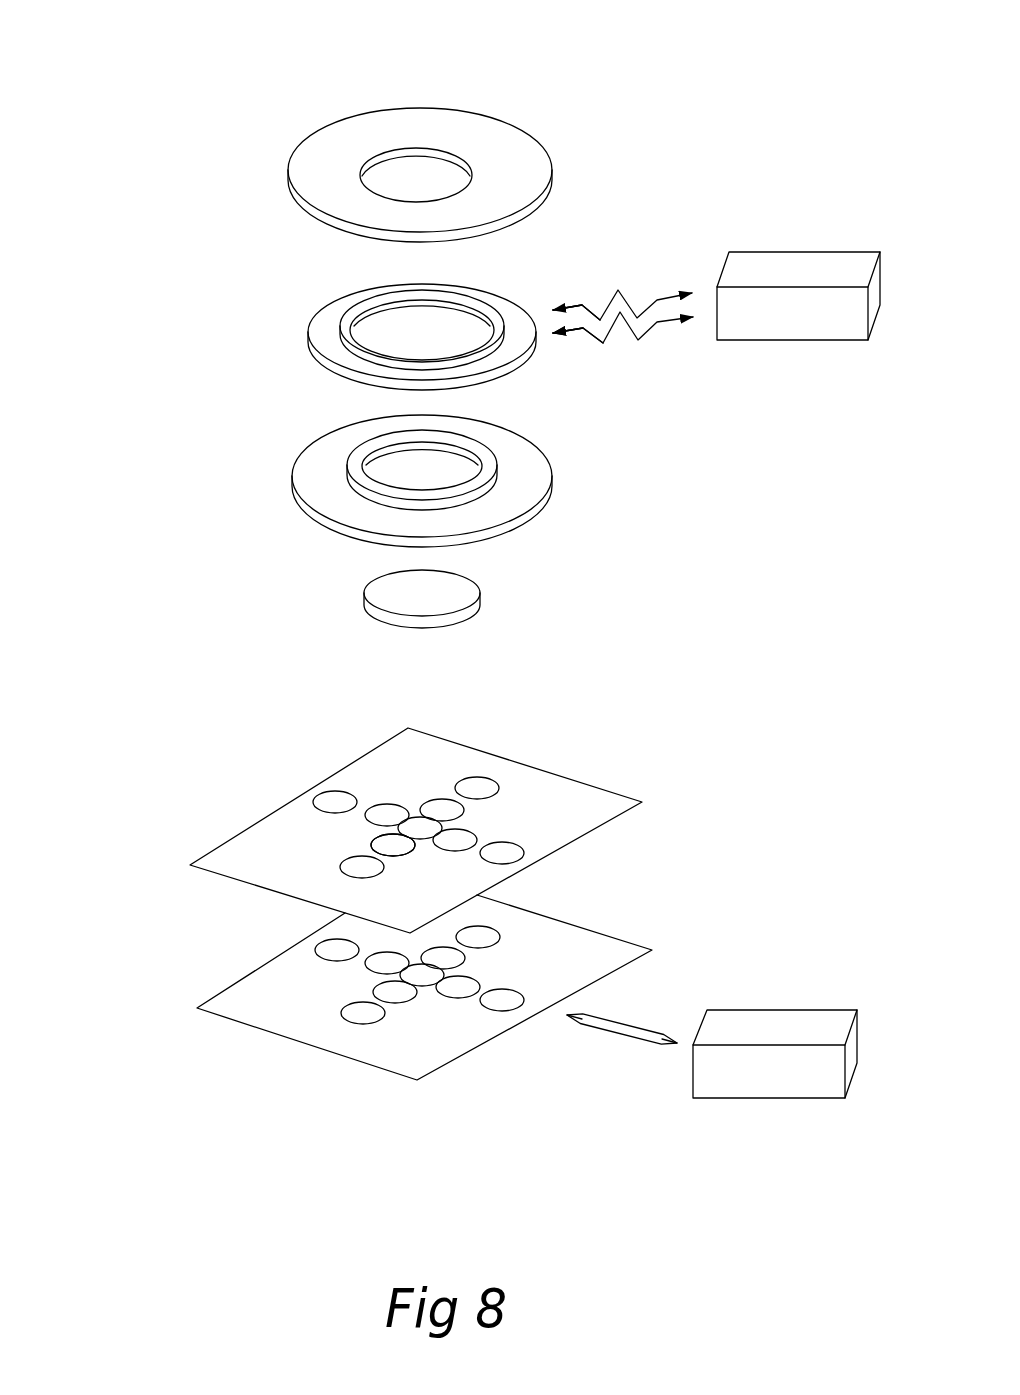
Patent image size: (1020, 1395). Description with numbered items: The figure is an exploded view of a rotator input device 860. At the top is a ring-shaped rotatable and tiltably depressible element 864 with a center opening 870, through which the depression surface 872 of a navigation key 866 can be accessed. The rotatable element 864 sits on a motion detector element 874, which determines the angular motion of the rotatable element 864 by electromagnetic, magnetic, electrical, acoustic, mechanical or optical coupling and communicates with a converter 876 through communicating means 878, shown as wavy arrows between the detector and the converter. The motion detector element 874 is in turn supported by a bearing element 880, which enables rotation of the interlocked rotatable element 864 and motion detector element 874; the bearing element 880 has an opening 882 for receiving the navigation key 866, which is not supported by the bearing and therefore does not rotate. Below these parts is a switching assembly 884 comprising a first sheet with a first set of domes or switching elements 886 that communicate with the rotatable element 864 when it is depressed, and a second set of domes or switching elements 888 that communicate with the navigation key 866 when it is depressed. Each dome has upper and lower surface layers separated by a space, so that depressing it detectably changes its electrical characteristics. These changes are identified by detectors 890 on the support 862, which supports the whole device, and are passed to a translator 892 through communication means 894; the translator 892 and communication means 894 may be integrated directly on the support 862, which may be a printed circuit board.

The rotator input device 860 is at (168, 235).
The support 862 is at (242, 1015).
The rotatable and tiltably depressible element 864 is at (443, 127).
The navigation key 866 is at (417, 569).
The center opening 870 is at (445, 187).
The depression surface 872 is at (368, 605).
The motion detector element 874 is at (330, 345).
The converter 876 is at (818, 270).
The communicating means 878 is at (625, 283).
The bearing element 880 is at (325, 490).
The opening 882 is at (452, 475).
The switching assembly 884 is at (705, 707).
The first set of domes or switching elements 886 is at (475, 785).
The second set of domes or switching elements 888 is at (380, 848).
The detectors 890 is at (490, 950).
The translator 892 is at (798, 1022).
The communication means 894 is at (625, 1035).